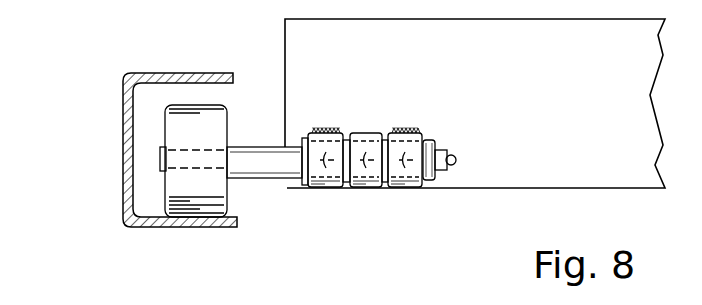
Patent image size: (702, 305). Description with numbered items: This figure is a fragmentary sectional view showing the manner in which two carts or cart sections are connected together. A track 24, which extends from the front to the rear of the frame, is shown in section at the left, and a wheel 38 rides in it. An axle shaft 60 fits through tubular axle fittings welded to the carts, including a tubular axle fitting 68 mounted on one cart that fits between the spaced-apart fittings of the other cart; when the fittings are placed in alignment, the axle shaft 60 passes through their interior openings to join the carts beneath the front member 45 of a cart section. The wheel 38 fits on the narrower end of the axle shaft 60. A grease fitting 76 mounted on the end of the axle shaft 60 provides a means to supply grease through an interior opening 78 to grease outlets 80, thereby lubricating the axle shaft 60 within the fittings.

The track 24 is at (121, 170).
The wheel 38 is at (188, 190).
The front member 45 is at (352, 36).
The axle shaft 60 is at (266, 176).
The tubular axle fitting 68 is at (367, 188).
The grease fitting 76 is at (456, 160).
The interior opening 78 is at (430, 133).
The grease outlet 80 is at (328, 133).